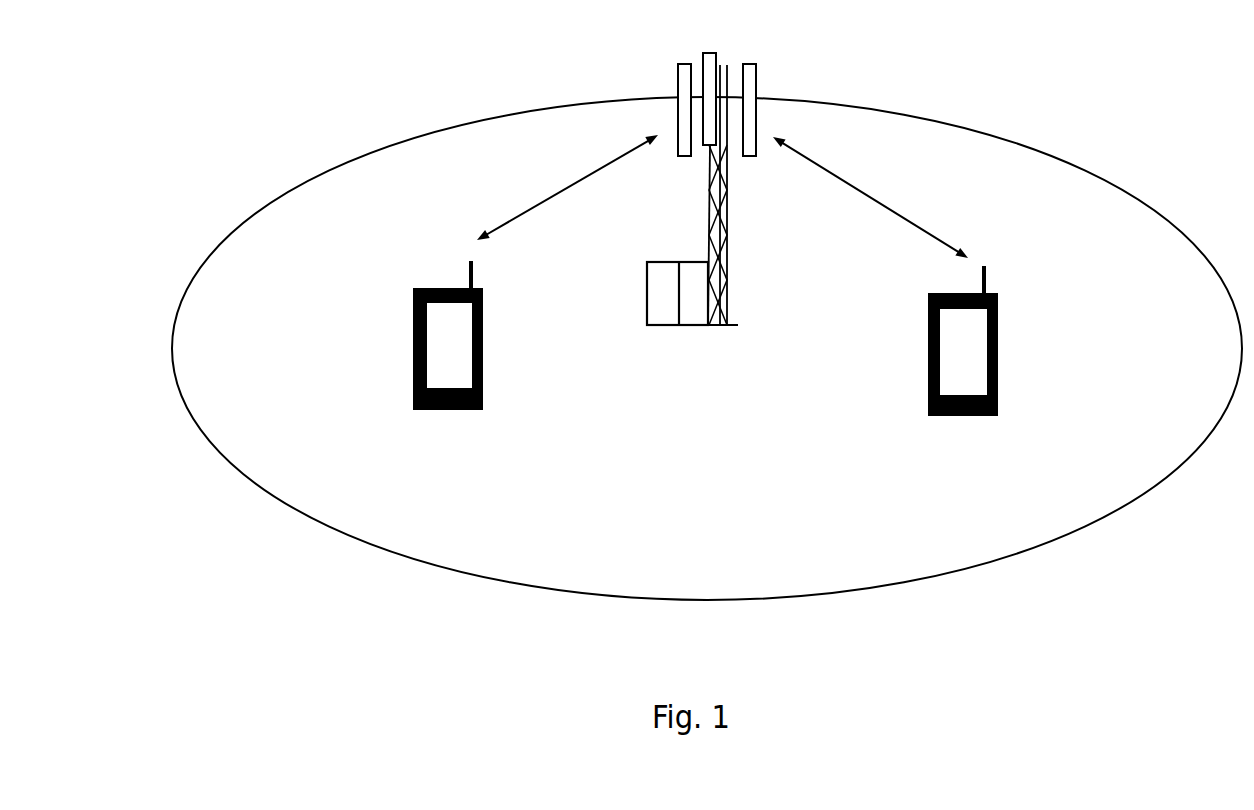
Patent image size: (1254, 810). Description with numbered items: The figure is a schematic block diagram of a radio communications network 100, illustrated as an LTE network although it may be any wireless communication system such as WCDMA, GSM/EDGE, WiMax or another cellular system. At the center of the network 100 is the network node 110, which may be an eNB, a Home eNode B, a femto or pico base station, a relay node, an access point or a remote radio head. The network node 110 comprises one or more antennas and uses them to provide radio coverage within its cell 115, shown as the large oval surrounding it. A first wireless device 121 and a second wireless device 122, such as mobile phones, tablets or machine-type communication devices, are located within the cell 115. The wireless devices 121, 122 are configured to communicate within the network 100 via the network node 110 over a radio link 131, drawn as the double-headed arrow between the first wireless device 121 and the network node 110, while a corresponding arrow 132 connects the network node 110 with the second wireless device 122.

The radio communications network 100 is at (707, 389).
The network node 110 is at (728, 294).
The cell 115 is at (303, 517).
The first wireless device 121 is at (413, 309).
The second wireless device 122 is at (998, 317).
The radio link 131 is at (545, 200).
The wireless link between base station and second UE 132 is at (842, 178).